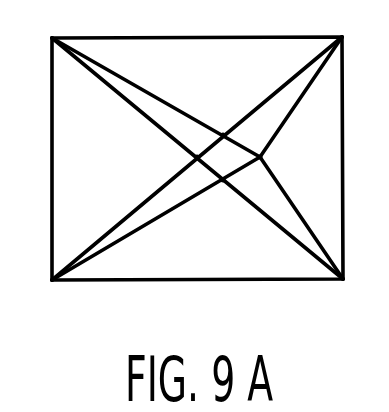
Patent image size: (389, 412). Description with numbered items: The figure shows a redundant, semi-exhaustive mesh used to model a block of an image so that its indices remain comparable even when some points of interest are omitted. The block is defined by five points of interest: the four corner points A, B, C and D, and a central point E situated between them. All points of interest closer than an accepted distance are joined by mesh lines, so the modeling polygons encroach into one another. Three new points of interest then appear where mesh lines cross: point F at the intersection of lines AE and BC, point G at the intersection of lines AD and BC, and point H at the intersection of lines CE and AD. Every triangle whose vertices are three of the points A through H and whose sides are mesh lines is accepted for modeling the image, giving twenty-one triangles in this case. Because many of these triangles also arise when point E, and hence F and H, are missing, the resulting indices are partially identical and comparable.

The point of interest A is at (38, 27).
The point of interest B is at (356, 28).
The point of interest C is at (41, 298).
The point of interest D is at (350, 296).
The point of interest E is at (263, 158).
The new point of interest F is at (225, 131).
The new point of interest G is at (193, 157).
The new point of interest H is at (224, 184).